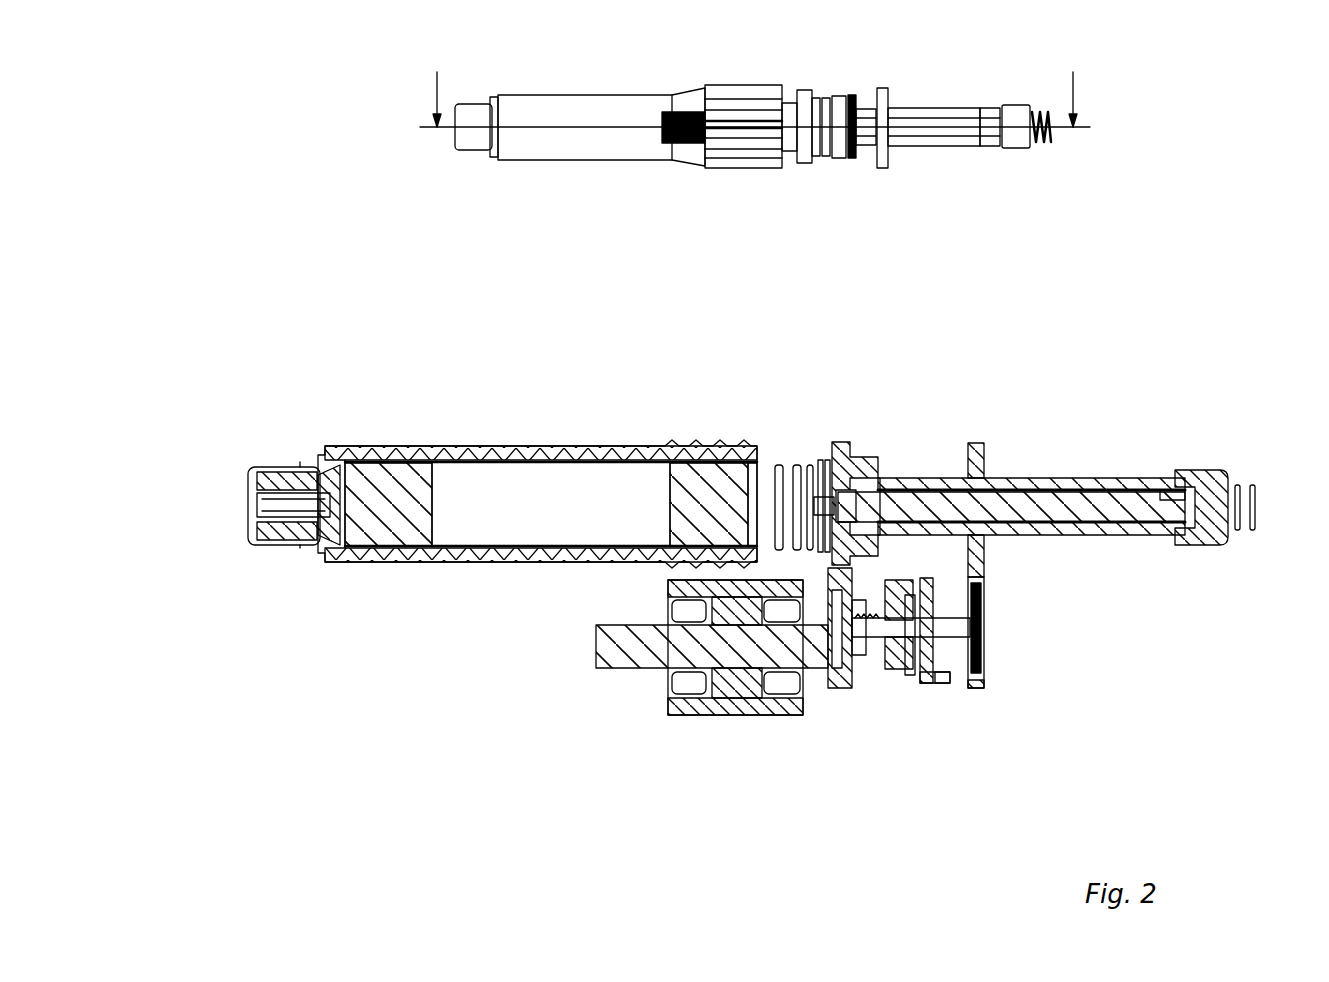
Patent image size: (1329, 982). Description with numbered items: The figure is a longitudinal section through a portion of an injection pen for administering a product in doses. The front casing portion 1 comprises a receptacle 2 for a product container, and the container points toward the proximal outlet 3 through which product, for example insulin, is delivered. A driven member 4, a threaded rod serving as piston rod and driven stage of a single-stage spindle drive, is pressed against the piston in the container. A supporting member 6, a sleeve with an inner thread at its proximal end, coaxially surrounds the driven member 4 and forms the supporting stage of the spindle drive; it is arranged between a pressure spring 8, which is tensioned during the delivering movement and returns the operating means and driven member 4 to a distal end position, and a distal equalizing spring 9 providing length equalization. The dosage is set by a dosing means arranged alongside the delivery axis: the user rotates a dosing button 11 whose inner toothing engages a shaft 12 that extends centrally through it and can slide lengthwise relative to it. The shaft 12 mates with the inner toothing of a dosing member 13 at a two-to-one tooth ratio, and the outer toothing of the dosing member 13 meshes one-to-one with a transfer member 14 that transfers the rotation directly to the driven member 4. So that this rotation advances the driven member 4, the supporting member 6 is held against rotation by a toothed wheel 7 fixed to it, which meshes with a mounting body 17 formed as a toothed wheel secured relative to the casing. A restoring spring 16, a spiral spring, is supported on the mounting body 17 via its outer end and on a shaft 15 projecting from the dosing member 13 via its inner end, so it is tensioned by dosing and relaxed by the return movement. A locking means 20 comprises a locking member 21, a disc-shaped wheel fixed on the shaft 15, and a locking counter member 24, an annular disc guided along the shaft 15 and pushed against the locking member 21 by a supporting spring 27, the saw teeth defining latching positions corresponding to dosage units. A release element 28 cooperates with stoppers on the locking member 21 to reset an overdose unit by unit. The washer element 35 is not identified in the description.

The front casing portion 1 is at (580, 100).
The receptacle 2 is at (402, 470).
The proximal outlet 3 is at (228, 512).
The driven member 4 is at (918, 500).
The supporting member 6 is at (1050, 480).
The toothed wheel 7 is at (978, 443).
The pressure spring 8 is at (792, 462).
The equalizing spring 9 is at (1256, 480).
The dosing button 11 is at (748, 95).
The shaft 12 is at (610, 670).
The dosing member 13 is at (834, 690).
The transfer member 14 is at (840, 455).
The shaft 15 is at (858, 640).
The restoring spring 16 is at (985, 660).
The mounting body 17 is at (985, 690).
The locking means 20 is at (850, 82).
The locking member 21 is at (935, 690).
The locking counter member 24 is at (885, 690).
The supporting spring 27 is at (860, 628).
The release element 28 is at (946, 690).
The washer 35 is at (822, 460).